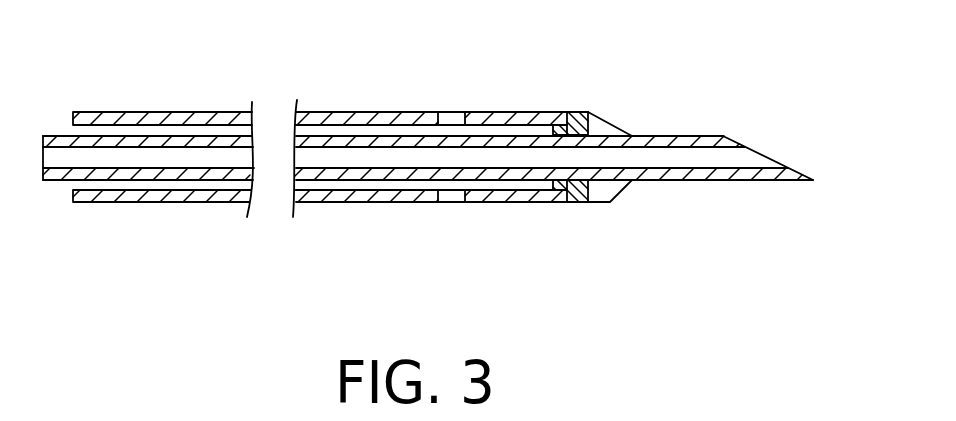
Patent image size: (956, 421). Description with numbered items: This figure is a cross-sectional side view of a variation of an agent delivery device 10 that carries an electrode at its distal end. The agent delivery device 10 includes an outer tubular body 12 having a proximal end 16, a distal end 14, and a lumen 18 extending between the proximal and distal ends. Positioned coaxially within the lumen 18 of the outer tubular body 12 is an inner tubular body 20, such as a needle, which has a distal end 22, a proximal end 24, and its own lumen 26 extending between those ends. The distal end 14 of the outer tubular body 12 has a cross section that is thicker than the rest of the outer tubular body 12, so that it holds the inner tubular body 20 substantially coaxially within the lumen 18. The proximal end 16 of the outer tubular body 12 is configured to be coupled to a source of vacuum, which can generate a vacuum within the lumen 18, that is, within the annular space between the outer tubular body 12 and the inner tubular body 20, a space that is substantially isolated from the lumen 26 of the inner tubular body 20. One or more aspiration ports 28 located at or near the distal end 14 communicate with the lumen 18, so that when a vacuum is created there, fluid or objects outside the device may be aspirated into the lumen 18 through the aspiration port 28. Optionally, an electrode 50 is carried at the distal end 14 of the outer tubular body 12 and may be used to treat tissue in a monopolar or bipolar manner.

The agent delivery device 10 is at (718, 70).
The outer tubular body 12 is at (350, 112).
The distal end 14 is at (543, 112).
The proximal end 16 is at (92, 117).
The lumen 18 is at (325, 185).
The inner tubular body 20 is at (407, 177).
The distal end 22 is at (748, 173).
The proximal end 24 is at (55, 173).
The lumen 26 is at (530, 158).
The aspiration port 28 is at (450, 112).
The electrode 50 is at (613, 122).